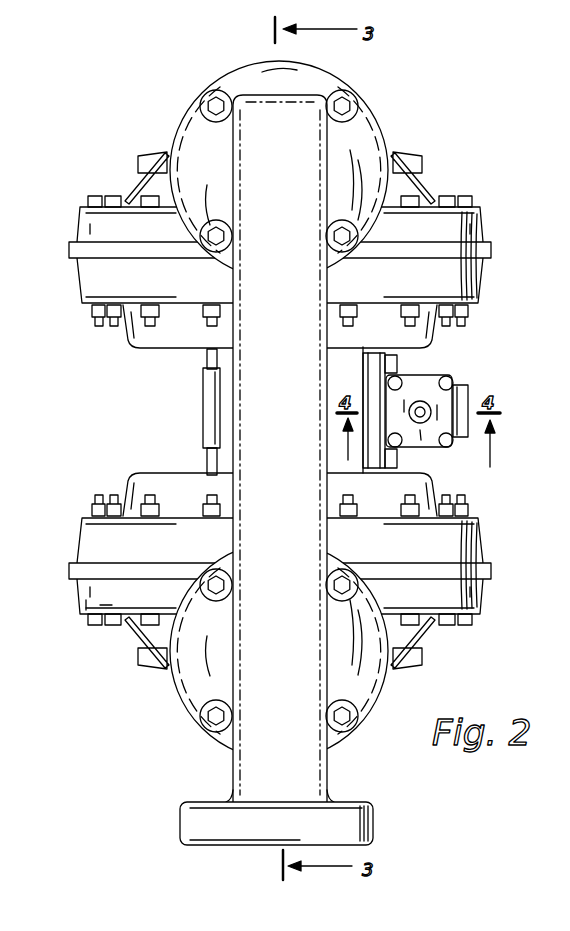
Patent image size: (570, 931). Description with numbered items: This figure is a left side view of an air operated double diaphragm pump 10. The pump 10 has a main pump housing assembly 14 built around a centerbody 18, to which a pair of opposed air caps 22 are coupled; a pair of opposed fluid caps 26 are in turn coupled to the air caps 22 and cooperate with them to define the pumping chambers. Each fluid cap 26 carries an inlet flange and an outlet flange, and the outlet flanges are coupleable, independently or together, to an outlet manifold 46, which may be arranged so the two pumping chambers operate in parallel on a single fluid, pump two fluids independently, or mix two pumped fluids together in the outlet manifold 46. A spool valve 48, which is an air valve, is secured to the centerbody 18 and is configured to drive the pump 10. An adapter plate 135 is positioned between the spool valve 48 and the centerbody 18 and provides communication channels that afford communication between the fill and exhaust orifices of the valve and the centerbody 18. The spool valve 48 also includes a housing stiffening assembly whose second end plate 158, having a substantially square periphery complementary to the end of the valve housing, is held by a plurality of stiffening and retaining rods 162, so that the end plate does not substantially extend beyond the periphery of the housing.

The air operated double diaphragm pump 10 is at (285, 436).
The main pump housing assembly 14 is at (140, 401).
The centerbody 18 is at (207, 460).
The air caps 22 is at (455, 276).
The fluid caps 26 is at (470, 213).
The outlet manifold 46 is at (250, 371).
The spool valve 48 is at (404, 409).
The adapter plate 135 is at (373, 372).
The second end plate 158 is at (402, 446).
The stiffening and retaining rods 162 is at (468, 389).